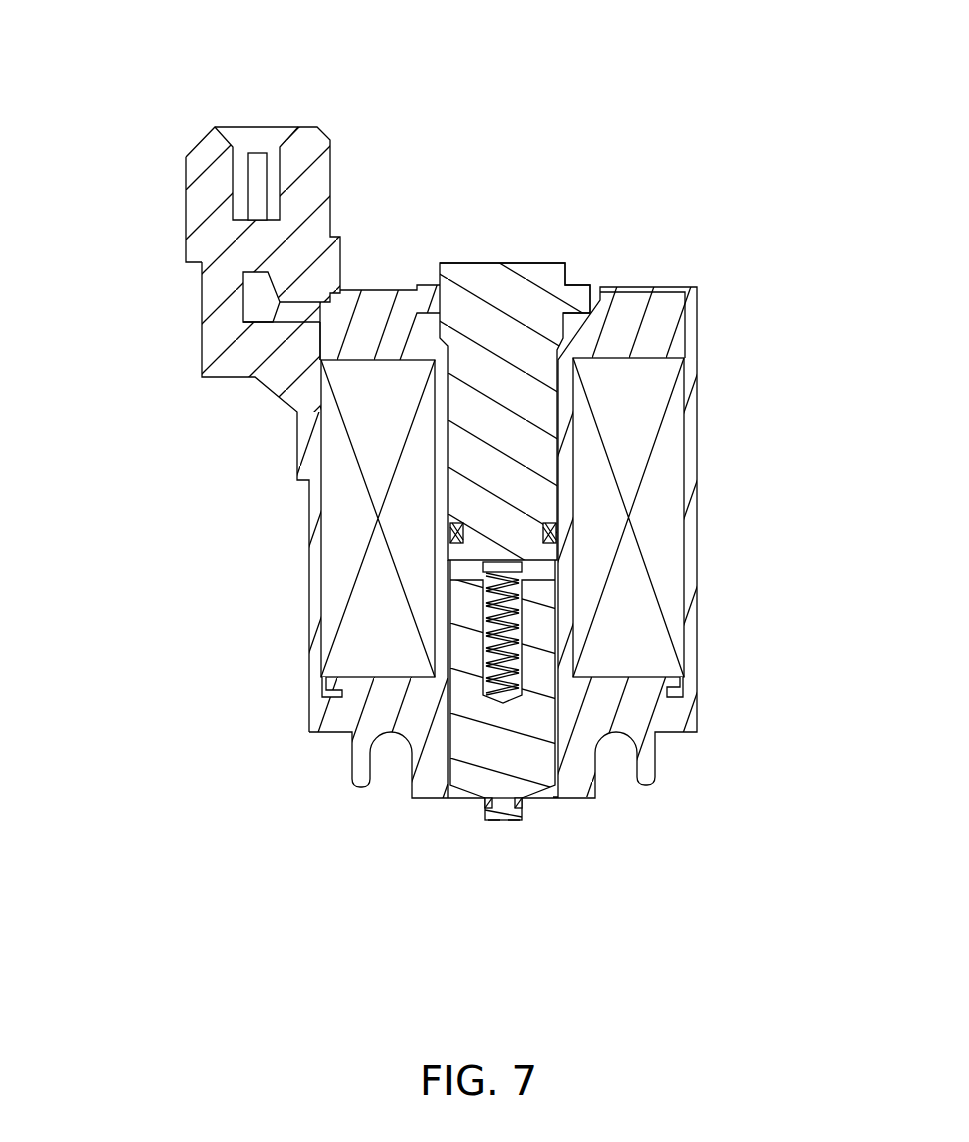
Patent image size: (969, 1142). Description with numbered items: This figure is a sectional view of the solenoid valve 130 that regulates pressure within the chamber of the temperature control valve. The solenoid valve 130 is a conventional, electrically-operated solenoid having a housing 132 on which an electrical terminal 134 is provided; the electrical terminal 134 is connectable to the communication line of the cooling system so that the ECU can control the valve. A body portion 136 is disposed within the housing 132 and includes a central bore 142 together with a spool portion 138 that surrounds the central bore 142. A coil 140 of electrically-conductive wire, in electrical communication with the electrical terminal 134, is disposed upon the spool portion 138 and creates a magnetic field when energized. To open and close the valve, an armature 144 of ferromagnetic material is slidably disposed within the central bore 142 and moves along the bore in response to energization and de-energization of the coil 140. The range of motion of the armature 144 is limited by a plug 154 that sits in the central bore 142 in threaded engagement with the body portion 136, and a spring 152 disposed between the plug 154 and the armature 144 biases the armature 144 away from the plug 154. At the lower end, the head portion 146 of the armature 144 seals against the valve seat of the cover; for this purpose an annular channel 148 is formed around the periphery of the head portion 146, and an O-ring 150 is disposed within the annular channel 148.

The solenoid valve 130 is at (121, 80).
The housing 132 is at (186, 220).
The electrical terminal 134 is at (258, 153).
The body portion 136 is at (343, 730).
The spool portion 138 is at (368, 355).
The coil 140 is at (332, 538).
The central bore 142 is at (603, 335).
The armature 144 is at (460, 693).
The head portion 146 is at (475, 777).
The annular channel 148 is at (496, 821).
The O-ring 150 is at (483, 806).
The spring 152 is at (510, 657).
The plug 154 is at (497, 263).